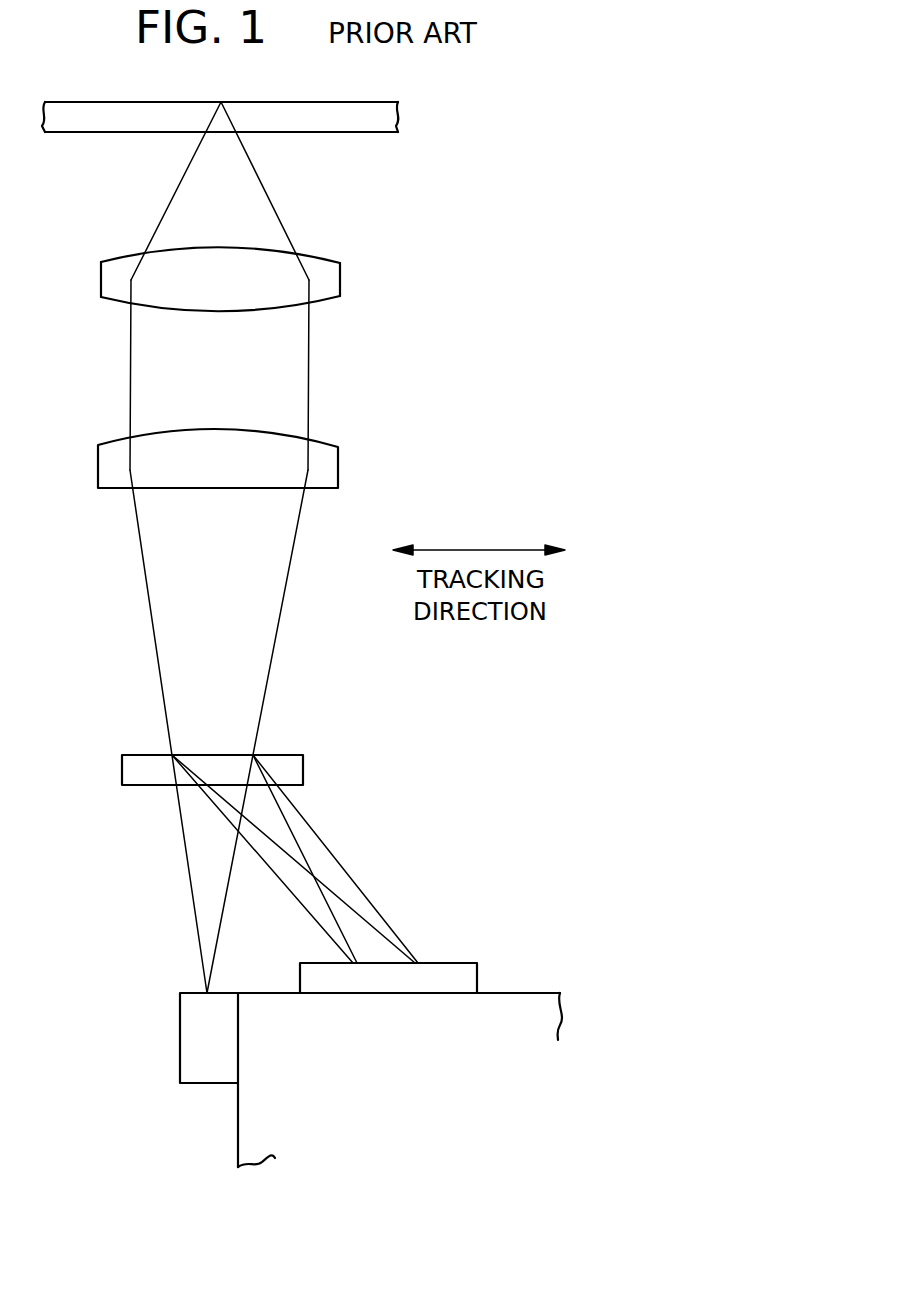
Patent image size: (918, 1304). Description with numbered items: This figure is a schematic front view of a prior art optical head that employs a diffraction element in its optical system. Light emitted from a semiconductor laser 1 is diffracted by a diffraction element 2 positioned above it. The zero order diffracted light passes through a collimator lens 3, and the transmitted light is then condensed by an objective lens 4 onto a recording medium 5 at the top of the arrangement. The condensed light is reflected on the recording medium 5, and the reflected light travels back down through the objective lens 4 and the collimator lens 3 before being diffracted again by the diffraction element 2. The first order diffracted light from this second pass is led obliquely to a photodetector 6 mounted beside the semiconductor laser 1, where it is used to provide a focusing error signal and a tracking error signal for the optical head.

The semiconductor laser 1 is at (180, 1043).
The diffraction element 2 is at (122, 778).
The collimator lens 3 is at (98, 475).
The objective lens 4 is at (101, 290).
The recording medium 5 is at (378, 126).
The photodetector 6 is at (457, 977).